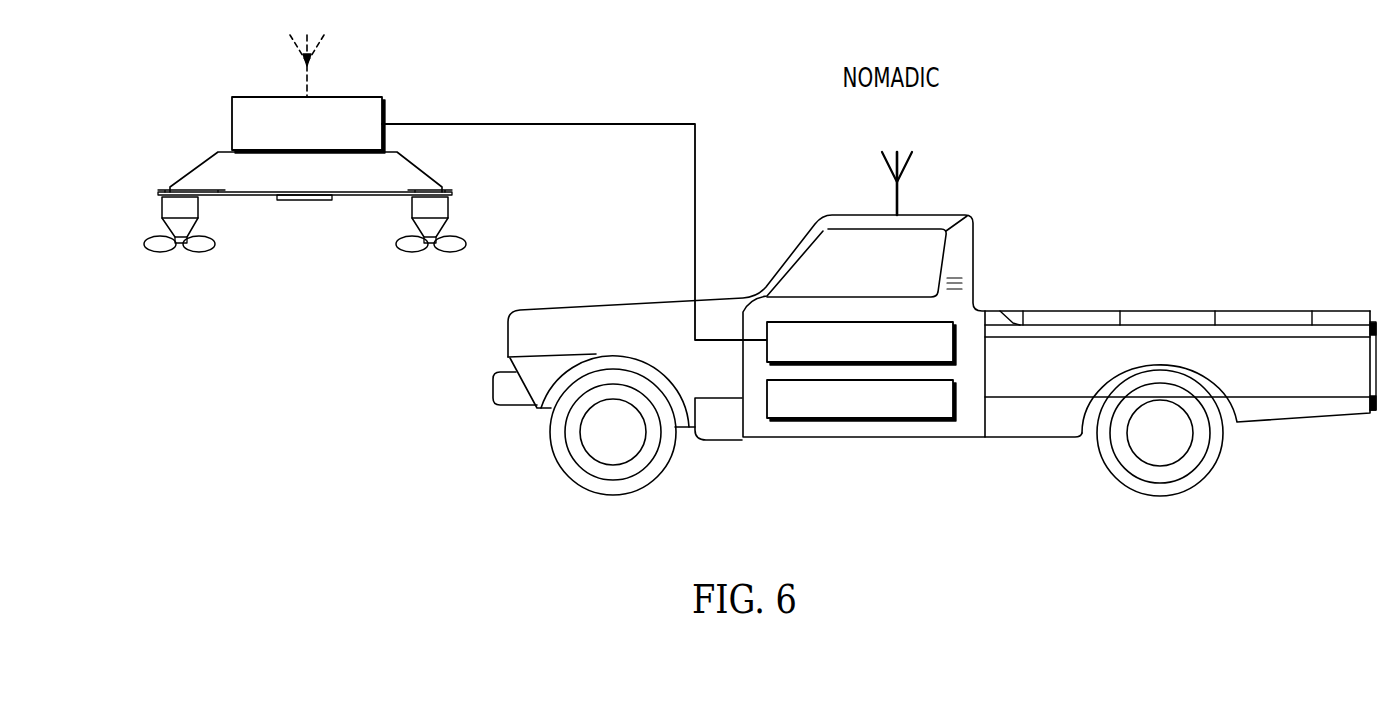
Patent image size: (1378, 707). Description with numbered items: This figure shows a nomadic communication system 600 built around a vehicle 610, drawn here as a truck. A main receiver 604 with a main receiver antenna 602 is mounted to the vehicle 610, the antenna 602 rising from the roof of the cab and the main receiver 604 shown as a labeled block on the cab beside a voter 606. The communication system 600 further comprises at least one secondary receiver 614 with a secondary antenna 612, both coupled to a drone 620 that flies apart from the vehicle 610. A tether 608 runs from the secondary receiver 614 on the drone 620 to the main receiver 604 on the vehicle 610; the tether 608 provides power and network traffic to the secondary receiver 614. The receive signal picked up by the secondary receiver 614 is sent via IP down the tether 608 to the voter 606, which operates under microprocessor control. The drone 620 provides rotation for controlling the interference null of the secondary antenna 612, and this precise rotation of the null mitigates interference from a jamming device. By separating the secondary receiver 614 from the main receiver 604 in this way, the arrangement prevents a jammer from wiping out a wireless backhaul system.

The communication system 600 is at (1223, 47).
The main receiver antenna 602 is at (911, 166).
The main receiver 604 is at (863, 322).
The voter 606 is at (849, 419).
The tether 608 is at (695, 237).
The vehicle 610 is at (973, 259).
The secondary antenna 612 is at (316, 47).
The secondary receiver 614 is at (232, 127).
The drone 620 is at (162, 207).